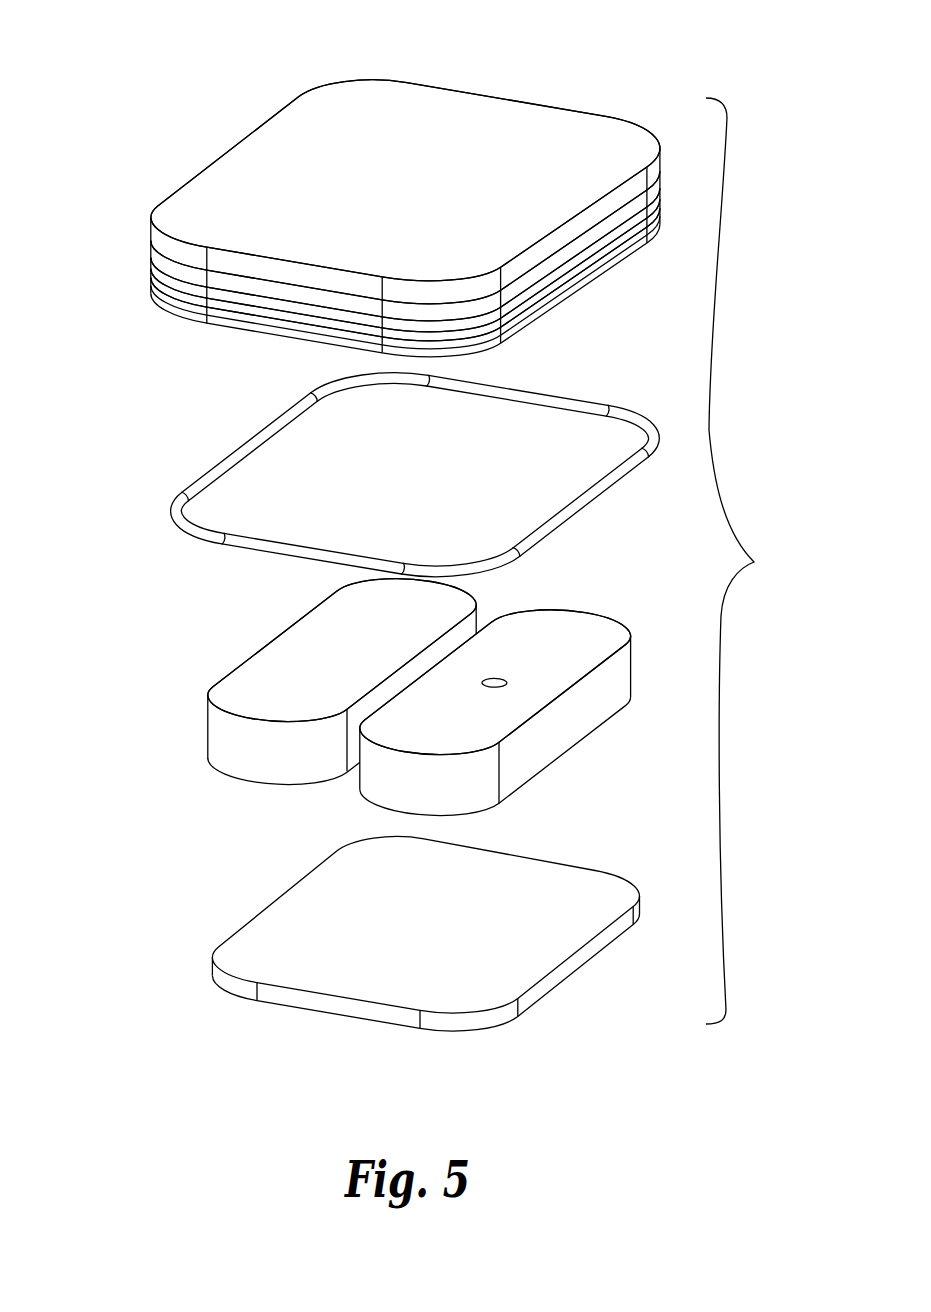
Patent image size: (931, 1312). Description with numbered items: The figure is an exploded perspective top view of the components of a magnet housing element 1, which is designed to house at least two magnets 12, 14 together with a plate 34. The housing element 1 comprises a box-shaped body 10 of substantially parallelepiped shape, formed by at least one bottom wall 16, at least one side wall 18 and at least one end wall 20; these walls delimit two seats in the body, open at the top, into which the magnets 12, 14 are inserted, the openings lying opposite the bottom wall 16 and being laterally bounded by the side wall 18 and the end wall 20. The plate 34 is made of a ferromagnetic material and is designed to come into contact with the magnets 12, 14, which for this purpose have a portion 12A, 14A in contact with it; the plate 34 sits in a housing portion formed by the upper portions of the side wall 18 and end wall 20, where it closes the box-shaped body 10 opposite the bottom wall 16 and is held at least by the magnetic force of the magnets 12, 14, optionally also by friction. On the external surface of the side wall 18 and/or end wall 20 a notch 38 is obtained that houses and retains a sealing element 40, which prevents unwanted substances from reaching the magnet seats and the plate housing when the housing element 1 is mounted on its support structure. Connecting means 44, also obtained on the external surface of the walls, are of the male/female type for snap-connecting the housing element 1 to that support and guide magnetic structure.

The housing element 1 is at (744, 561).
The box-shaped body 10 is at (248, 126).
The bottom wall 16 is at (406, 104).
The side wall 18 is at (573, 227).
The end wall 20 is at (262, 272).
The connecting means 44 is at (174, 268).
The notch 38 is at (200, 300).
The sealing element 40 is at (178, 518).
The magnet 12 is at (608, 606).
The portion of the magnet 12A is at (545, 685).
The magnet 14 is at (217, 783).
The portion of the magnet 14A is at (285, 664).
The plate 34 is at (323, 968).